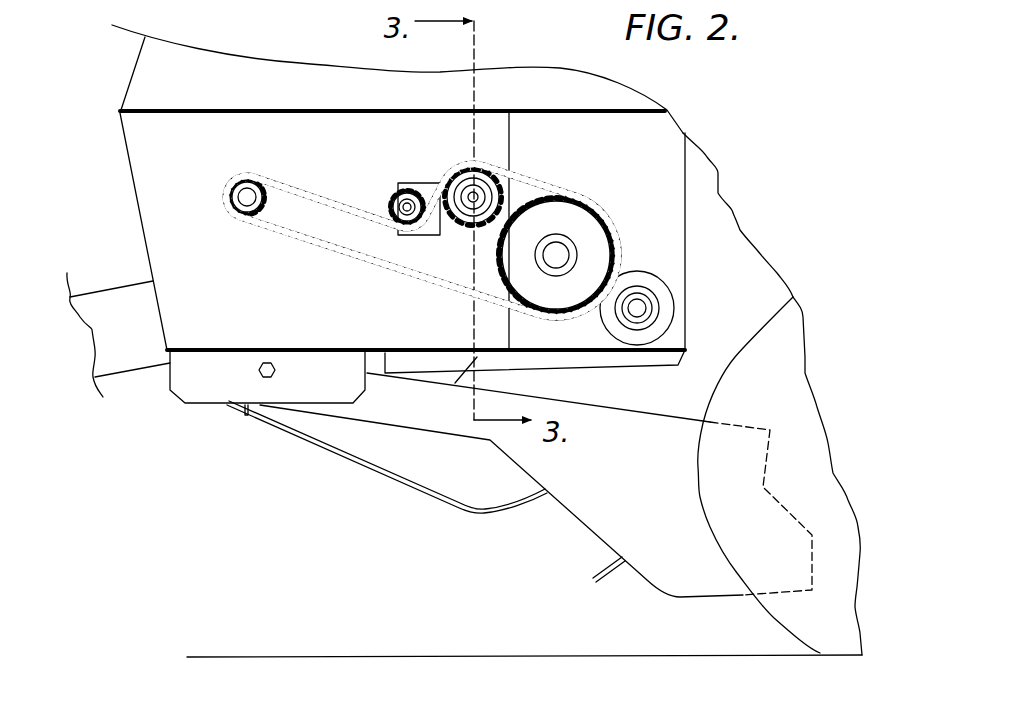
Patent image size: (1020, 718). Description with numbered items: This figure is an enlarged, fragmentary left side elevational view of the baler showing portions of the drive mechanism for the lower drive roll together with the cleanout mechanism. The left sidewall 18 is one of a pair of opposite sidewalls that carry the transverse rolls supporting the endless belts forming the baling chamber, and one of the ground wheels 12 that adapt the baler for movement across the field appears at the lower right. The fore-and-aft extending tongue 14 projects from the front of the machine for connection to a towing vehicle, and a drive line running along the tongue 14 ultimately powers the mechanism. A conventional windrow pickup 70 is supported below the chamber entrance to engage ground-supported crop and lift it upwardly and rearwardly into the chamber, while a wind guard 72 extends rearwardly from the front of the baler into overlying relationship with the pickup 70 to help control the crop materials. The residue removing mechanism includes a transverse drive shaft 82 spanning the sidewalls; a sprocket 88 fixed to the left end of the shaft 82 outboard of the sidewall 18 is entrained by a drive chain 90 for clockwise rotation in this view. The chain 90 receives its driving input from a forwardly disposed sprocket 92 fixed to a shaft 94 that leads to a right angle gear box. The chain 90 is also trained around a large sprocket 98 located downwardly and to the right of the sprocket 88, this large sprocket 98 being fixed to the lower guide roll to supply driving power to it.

The ground wheel 12 is at (716, 513).
The tongue 14 is at (122, 300).
The sidewall 18 is at (213, 77).
The windrow pickup 70 is at (596, 556).
The wind guard 72 is at (400, 488).
The drive shaft 82 is at (470, 190).
The sprocket 88 is at (471, 217).
The drive chain 90 is at (535, 182).
The sprocket 92 is at (272, 183).
The shaft 94 is at (243, 200).
The large sprocket 98 is at (603, 247).